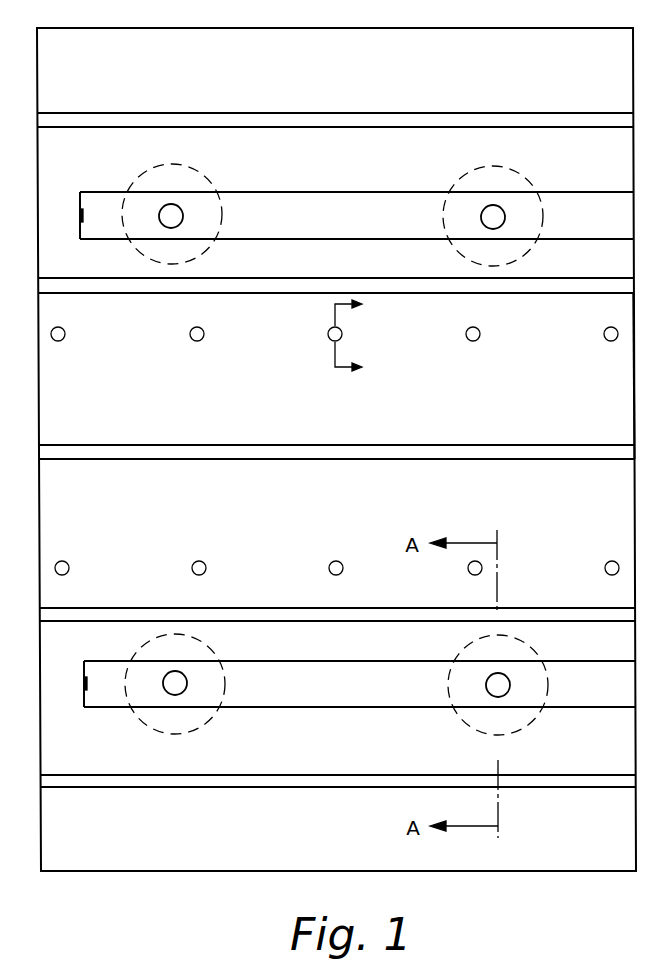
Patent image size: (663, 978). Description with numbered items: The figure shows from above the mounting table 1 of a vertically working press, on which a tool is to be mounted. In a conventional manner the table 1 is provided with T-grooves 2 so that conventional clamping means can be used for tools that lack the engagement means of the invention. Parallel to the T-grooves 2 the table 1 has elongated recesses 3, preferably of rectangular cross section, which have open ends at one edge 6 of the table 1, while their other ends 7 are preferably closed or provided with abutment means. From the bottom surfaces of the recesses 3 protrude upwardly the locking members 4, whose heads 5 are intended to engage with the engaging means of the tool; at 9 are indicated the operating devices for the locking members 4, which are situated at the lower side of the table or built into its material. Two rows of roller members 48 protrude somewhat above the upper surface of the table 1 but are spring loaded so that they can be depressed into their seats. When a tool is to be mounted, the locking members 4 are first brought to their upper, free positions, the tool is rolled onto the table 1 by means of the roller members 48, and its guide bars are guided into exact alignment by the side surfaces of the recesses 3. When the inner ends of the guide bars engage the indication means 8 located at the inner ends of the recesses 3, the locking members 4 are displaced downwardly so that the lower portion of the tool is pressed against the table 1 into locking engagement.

The table 1 is at (384, 90).
The T-grooves 2 is at (250, 123).
The elongated recesses 3 is at (327, 212).
The locking members 4 is at (186, 182).
The heads 5 is at (493, 217).
The edge of the table 6 is at (634, 398).
The other ends of the recesses 7 is at (103, 205).
The indication means 8 is at (80, 214).
The operating devices 9 is at (455, 182).
The roller members 48 is at (198, 341).